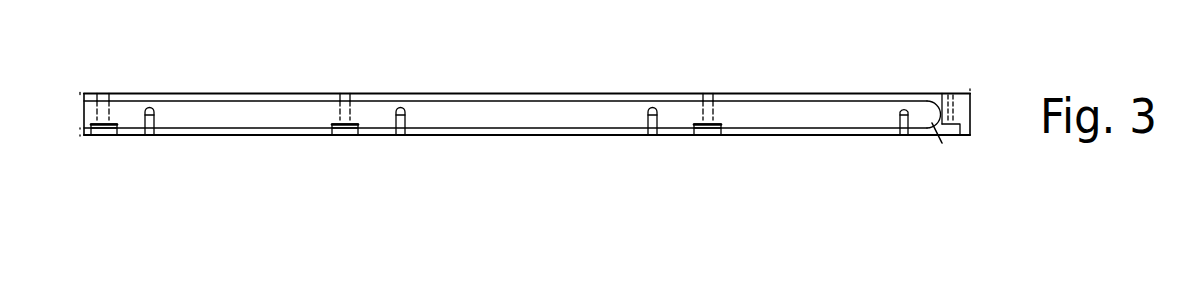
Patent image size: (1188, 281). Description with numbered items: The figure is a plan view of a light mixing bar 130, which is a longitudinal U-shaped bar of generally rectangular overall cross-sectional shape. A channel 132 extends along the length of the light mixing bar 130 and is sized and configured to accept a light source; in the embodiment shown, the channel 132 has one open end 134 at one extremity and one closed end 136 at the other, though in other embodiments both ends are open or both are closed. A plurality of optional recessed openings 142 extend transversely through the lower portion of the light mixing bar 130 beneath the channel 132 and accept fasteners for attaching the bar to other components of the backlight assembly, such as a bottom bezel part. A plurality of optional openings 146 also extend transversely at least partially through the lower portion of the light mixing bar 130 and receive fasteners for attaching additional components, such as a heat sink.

The light mixing bar 130 is at (532, 107).
The channel 132 is at (477, 117).
The open end 134 is at (88, 112).
The closed end 136 is at (927, 110).
The recessed openings 142 is at (705, 132).
The openings 146 is at (653, 130).